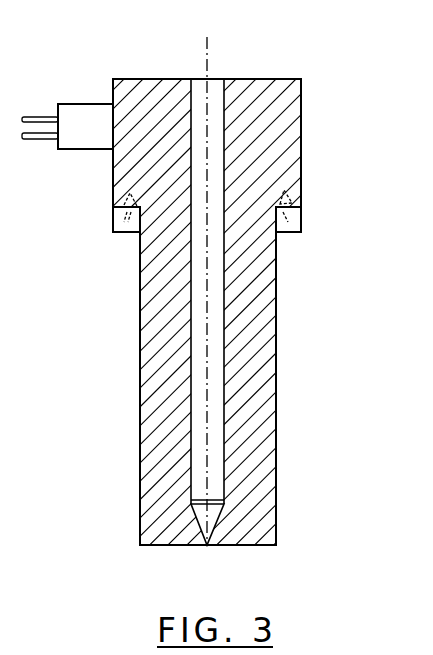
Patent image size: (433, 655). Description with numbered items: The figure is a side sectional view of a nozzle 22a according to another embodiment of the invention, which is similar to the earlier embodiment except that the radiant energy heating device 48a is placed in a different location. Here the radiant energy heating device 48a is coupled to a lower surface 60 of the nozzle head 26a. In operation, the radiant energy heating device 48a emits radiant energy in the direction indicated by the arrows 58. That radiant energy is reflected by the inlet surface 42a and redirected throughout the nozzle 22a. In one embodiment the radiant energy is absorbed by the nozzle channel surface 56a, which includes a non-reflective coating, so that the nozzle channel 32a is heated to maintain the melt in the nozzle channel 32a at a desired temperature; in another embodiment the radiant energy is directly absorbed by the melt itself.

The nozzle 22a is at (256, 358).
The nozzle head 26a is at (289, 144).
The inlet surface 42a is at (287, 79).
The radiant energy heating device 48a is at (291, 215).
The nozzle channel surface 56a is at (232, 278).
The arrows 58 is at (284, 203).
The lower surface 60 is at (113, 212).
The nozzle channel 32a is at (217, 395).